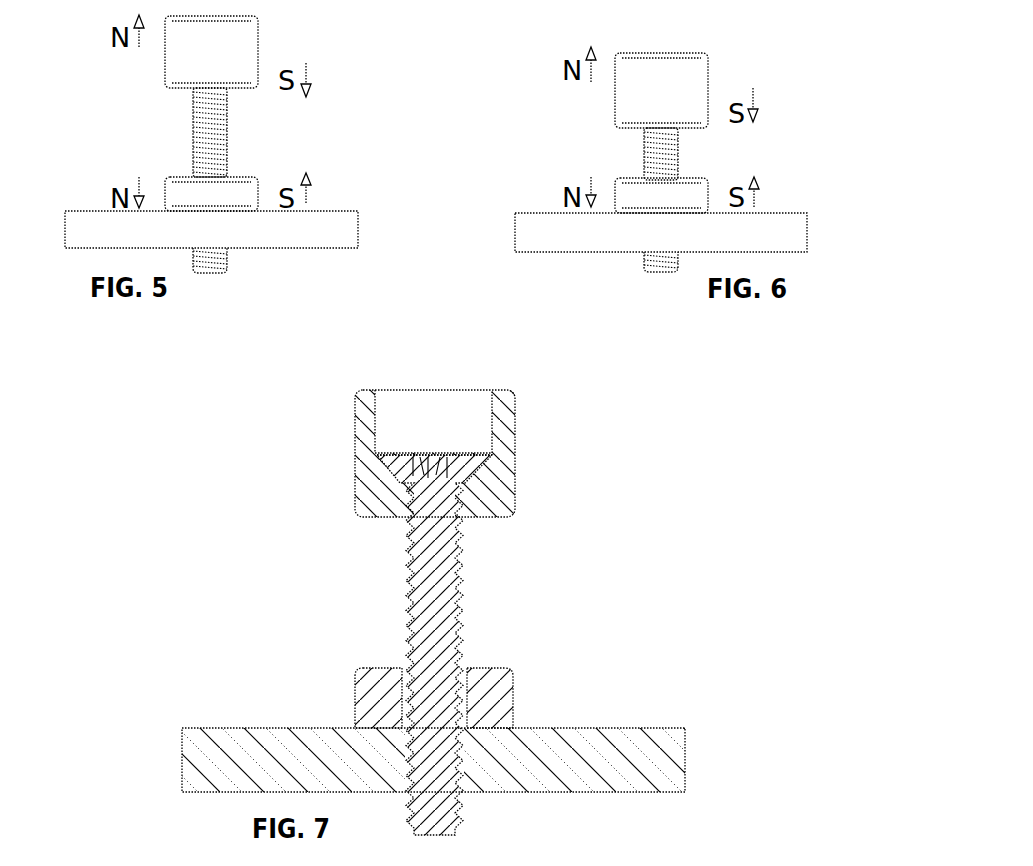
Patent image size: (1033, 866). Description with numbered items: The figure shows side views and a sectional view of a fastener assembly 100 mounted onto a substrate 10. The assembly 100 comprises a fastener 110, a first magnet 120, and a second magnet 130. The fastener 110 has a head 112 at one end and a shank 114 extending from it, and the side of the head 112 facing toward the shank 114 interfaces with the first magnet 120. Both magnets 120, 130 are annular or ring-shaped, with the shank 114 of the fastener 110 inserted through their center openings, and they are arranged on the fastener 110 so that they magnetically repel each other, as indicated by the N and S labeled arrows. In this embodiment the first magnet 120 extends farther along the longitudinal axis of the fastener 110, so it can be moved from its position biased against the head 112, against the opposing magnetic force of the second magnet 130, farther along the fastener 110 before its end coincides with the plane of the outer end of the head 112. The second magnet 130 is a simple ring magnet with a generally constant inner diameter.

In FIG. 5, the fastener assembly 100 is at (92, 110).
In FIG. 5, the substrate 10 is at (270, 237).
In FIG. 7, the substrate 10 is at (578, 788).
In FIG. 6, the fastener 110 is at (616, 147).
In FIG. 7, the head 112 is at (437, 445).
In FIG. 7, the shank 114 is at (460, 590).
In FIG. 6, the first magnet 120 is at (698, 80).
In FIG. 7, the first magnet 120 is at (353, 452).
In FIG. 6, the second magnet 130 is at (700, 190).
In FIG. 7, the second magnet 130 is at (353, 697).